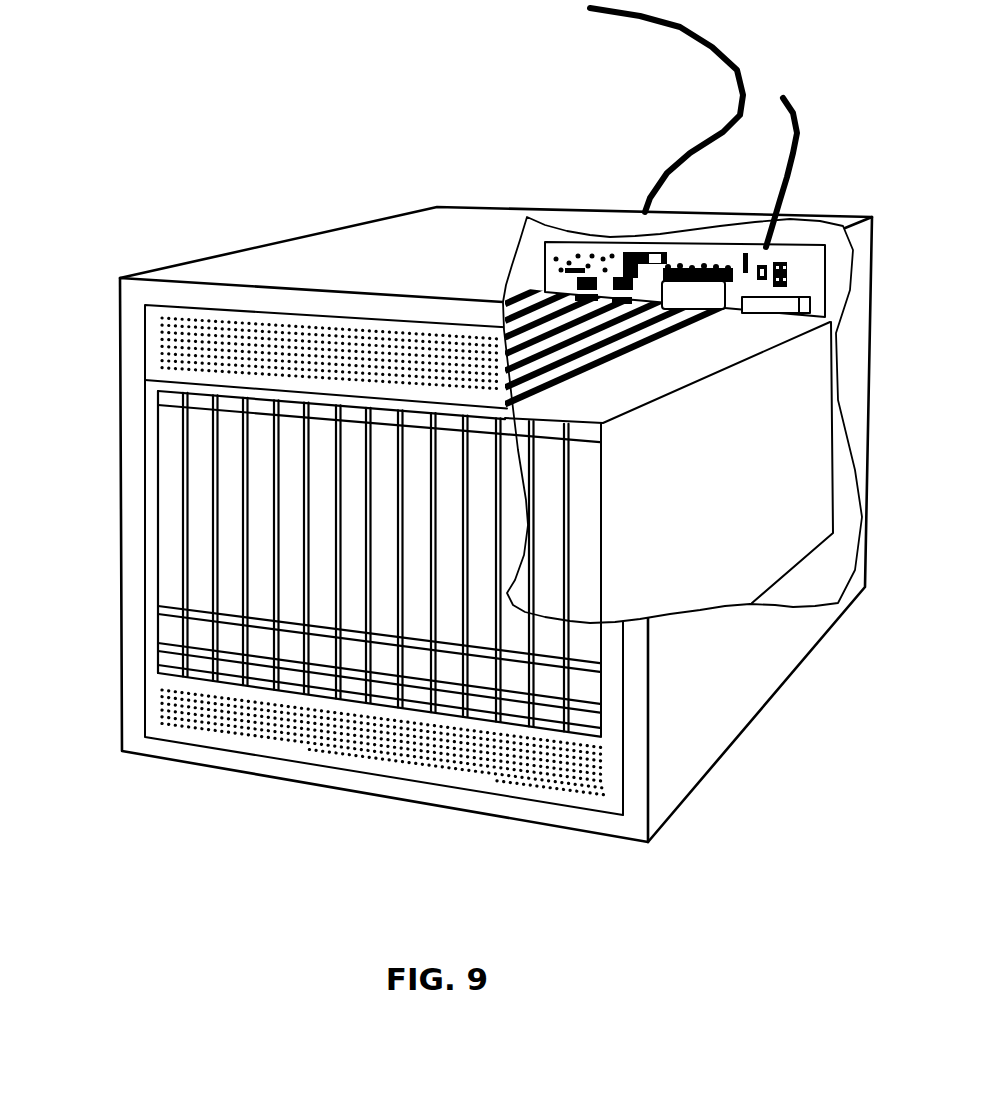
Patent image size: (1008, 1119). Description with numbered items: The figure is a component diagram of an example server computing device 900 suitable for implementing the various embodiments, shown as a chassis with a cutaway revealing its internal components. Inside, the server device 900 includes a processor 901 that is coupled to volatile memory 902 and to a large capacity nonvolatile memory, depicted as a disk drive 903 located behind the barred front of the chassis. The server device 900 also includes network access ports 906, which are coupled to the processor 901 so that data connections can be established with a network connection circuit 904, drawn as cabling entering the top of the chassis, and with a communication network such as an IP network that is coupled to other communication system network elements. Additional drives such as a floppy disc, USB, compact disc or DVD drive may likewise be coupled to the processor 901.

The server computing device 900 is at (456, 459).
The processor 901 is at (697, 297).
The volatile memory 902 is at (803, 291).
The disk drive 903 is at (228, 477).
The network connection circuit 904 is at (745, 80).
The network access ports 906 is at (646, 248).